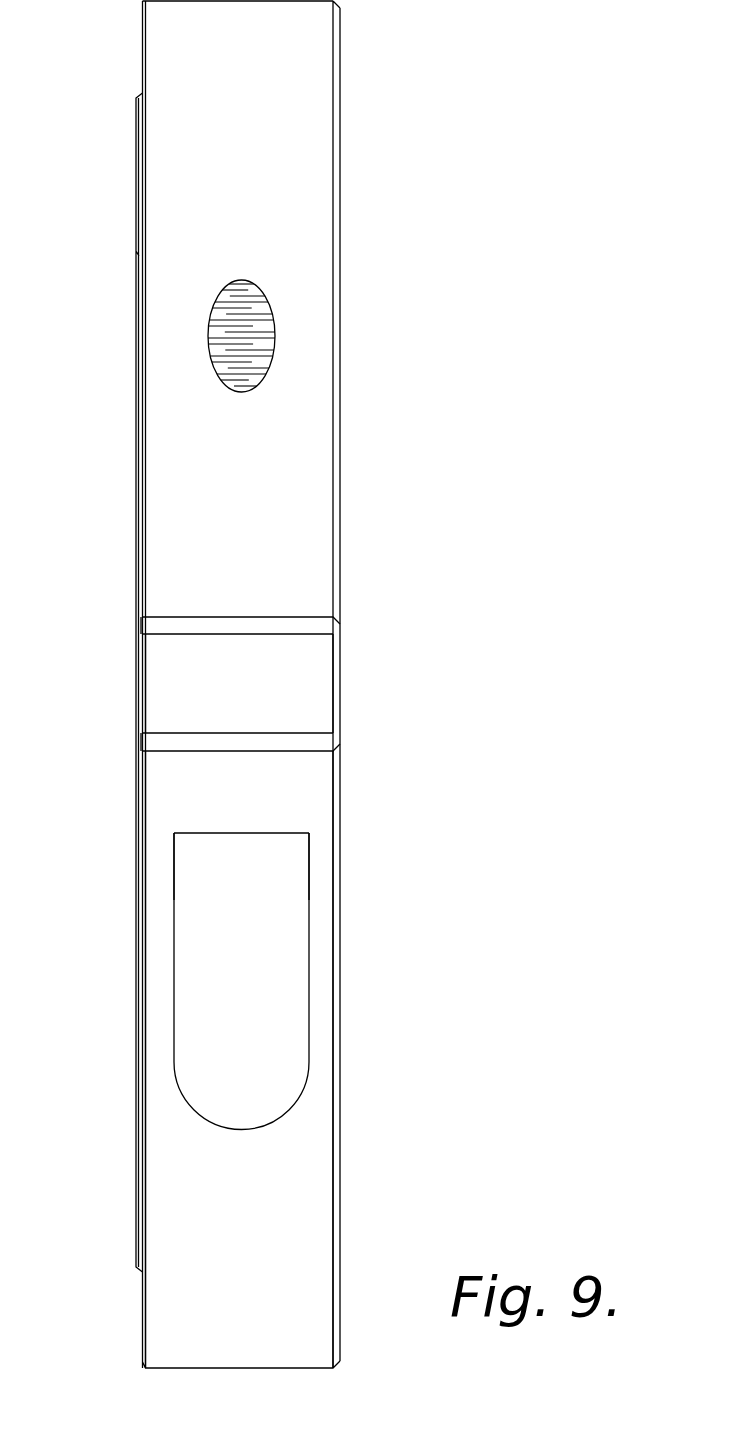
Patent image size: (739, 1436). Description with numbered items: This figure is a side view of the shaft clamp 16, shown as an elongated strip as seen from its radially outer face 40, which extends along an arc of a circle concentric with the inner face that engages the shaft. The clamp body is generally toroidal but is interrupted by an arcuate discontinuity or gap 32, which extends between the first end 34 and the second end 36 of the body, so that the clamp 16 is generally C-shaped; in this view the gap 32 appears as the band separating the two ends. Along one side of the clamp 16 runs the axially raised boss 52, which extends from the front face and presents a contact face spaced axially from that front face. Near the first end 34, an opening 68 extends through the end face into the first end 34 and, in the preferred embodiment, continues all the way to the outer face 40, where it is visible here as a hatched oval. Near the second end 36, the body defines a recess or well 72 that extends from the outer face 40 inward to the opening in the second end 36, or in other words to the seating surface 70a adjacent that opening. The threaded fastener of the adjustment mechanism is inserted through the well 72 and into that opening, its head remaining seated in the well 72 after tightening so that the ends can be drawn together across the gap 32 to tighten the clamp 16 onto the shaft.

The shaft clamp 16 is at (372, 184).
The axially raised boss 52 is at (138, 210).
The opening 68 is at (264, 319).
The first end 34 is at (243, 597).
The gap 32 is at (300, 679).
The second end 36 is at (264, 762).
The seating surface 70a is at (244, 834).
The well 72 is at (268, 993).
The radially outer face 40 is at (305, 1216).